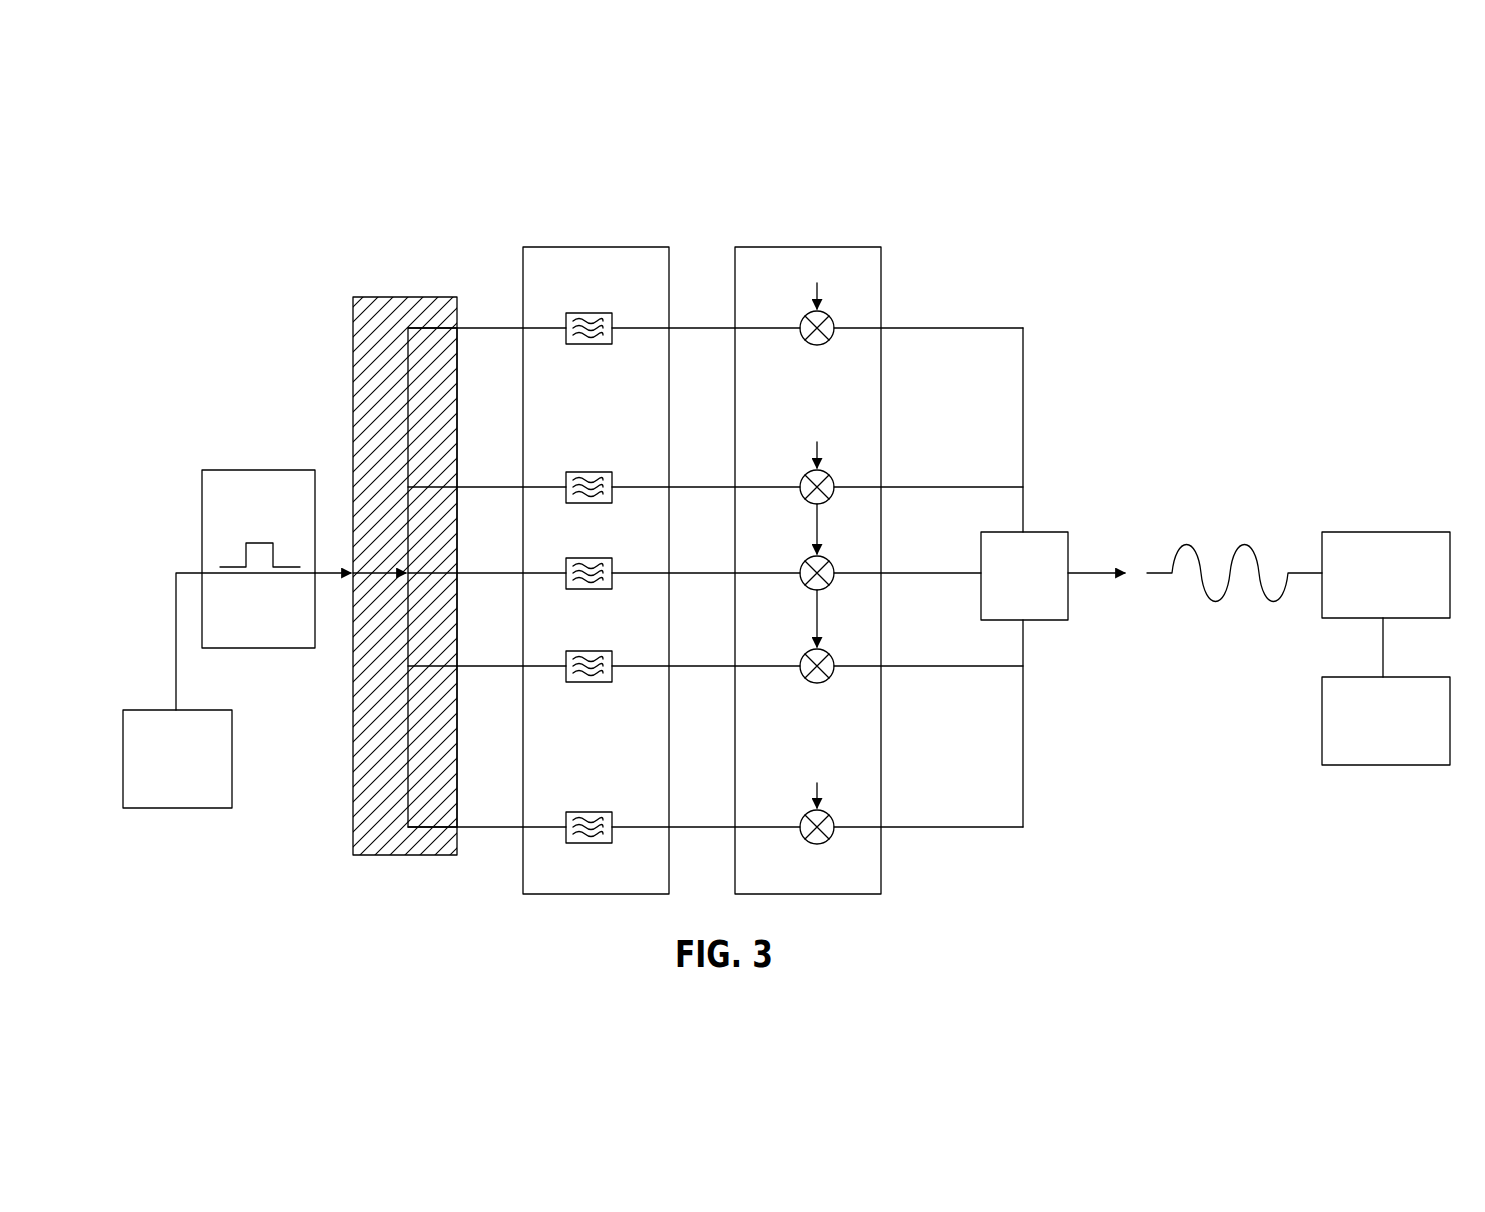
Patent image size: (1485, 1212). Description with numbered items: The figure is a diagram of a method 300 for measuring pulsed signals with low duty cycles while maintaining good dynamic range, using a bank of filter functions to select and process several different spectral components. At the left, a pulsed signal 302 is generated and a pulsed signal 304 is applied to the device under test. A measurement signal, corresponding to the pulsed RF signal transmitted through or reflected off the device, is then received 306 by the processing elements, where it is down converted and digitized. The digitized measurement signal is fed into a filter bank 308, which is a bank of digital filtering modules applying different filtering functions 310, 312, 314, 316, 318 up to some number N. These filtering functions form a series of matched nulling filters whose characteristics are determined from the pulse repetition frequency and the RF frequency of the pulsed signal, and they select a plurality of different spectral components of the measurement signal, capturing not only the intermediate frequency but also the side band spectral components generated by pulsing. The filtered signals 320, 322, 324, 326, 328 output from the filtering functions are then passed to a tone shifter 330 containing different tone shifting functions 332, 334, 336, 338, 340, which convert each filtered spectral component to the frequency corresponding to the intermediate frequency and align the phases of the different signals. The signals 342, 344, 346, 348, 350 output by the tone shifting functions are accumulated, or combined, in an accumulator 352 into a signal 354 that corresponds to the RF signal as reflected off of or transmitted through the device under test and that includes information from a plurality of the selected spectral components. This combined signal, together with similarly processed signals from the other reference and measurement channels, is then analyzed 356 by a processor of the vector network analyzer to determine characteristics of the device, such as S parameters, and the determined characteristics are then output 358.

The method 300 is at (1109, 864).
The pulsed signal 302 is at (159, 796).
The pulsed signal applied to device under test 304 is at (240, 612).
The measurement signal receiving 306 is at (405, 297).
The filter bank 308 is at (587, 247).
The filtering function 310 is at (586, 345).
The filtering function 312 is at (586, 504).
The filtering function 314 is at (586, 590).
The filtering function 316 is at (586, 683).
The filtering function 318 is at (586, 844).
The filtered signal 320 is at (702, 329).
The filtered signal 322 is at (702, 488).
The filtered signal 324 is at (702, 574).
The filtered signal 326 is at (702, 667).
The filtered signal 328 is at (702, 828).
The tone shifter 330 is at (800, 247).
The tone shifting function 332 is at (808, 344).
The tone shifting function 334 is at (802, 491).
The tone shifting function 336 is at (802, 578).
The tone shifting function 338 is at (802, 671).
The tone shifting function 340 is at (808, 843).
The tone shifted output signal 342 is at (921, 327).
The tone shifted output signal 344 is at (921, 486).
The tone shifted output signal 346 is at (921, 572).
The tone shifted output signal 348 is at (921, 665).
The tone shifted output signal 350 is at (921, 826).
The accumulator 352 is at (1055, 532).
The combined signal 354 is at (1247, 528).
The analyzing step 356 is at (1368, 599).
The output step 358 is at (1368, 746).